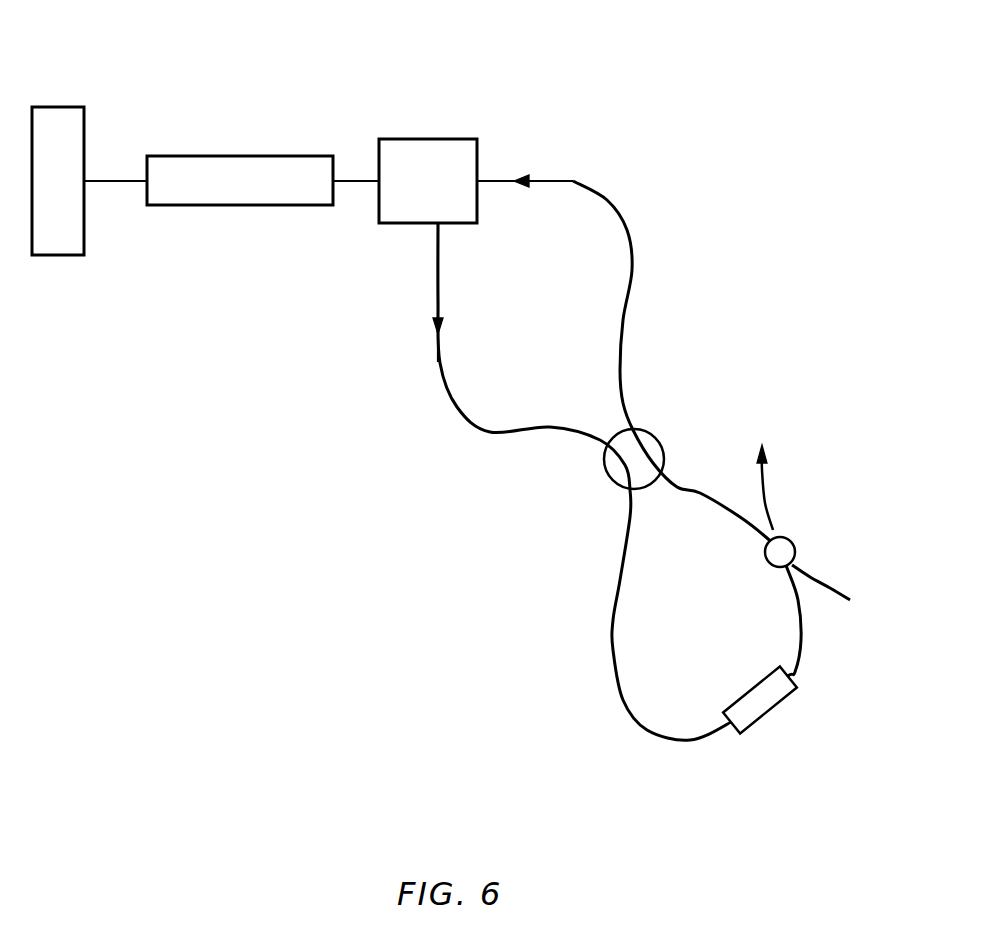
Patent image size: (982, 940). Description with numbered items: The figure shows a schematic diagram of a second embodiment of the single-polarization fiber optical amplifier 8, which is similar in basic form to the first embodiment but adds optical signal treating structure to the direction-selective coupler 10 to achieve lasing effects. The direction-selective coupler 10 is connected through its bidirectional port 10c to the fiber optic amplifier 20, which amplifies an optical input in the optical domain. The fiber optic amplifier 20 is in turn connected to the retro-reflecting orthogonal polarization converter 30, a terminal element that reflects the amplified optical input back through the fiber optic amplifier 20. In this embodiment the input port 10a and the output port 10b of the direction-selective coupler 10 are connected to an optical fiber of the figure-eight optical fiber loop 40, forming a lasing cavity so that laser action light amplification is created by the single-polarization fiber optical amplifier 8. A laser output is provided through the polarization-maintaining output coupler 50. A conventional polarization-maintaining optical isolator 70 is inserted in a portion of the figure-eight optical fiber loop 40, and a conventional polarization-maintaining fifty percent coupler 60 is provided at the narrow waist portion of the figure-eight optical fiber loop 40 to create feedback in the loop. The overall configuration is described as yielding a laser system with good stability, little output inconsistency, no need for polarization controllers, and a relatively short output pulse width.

The single-polarization fiber optical amplifier 8 is at (221, 252).
The direction-selective coupler 10 is at (440, 195).
The input port 10a is at (478, 172).
The output port 10b is at (440, 223).
The bidirectional port 10c is at (379, 175).
The fiber optic amplifier 20 is at (248, 195).
The retro-reflecting orthogonal polarization converter 30 is at (68, 195).
The figure-eight optical fiber loop 40 is at (587, 642).
The polarization-maintaining output coupler 50 is at (793, 537).
The polarization-maintaining 50% coupler 60 is at (610, 477).
The polarization-maintaining optical isolator 70 is at (770, 740).